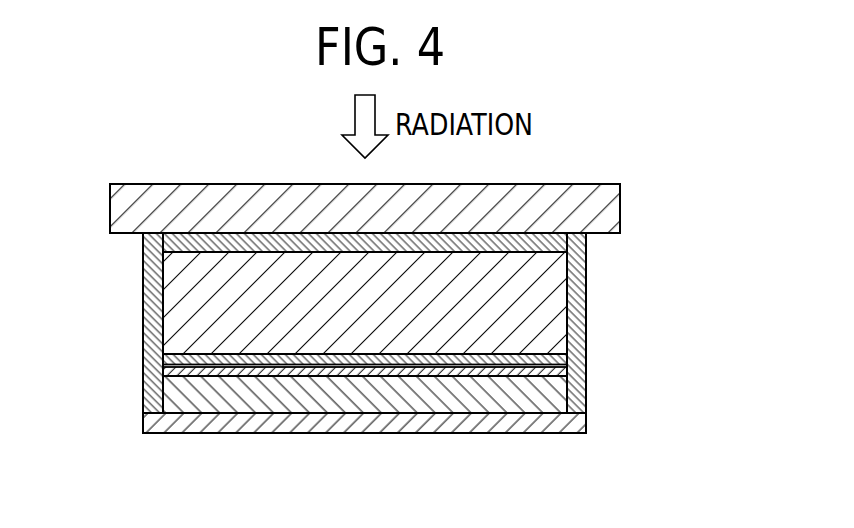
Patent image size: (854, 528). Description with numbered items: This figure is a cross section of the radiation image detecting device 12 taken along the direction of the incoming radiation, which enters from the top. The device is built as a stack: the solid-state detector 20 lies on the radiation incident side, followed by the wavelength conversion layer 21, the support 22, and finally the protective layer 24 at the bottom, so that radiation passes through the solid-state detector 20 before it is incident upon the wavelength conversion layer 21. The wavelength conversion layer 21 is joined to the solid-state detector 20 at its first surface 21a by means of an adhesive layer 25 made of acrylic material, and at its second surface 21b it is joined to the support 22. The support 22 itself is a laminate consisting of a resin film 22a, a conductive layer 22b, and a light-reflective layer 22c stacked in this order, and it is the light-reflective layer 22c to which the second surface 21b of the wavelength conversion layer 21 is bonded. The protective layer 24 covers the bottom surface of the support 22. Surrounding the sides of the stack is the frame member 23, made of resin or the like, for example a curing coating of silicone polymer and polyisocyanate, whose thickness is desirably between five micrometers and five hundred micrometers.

The radiation image detecting device 12 is at (150, 168).
The solid-state detector 20 is at (620, 205).
The adhesive layer 25 is at (553, 242).
The wavelength conversion layer 21 is at (183, 302).
The first surface 21a is at (178, 248).
The second surface 21b is at (173, 357).
The support 22 is at (673, 347).
The resin film 22a is at (558, 397).
The conductive layer 22b is at (558, 372).
The light-reflective layer 22c is at (560, 358).
The frame member 23 is at (583, 305).
The protective layer 24 is at (383, 423).